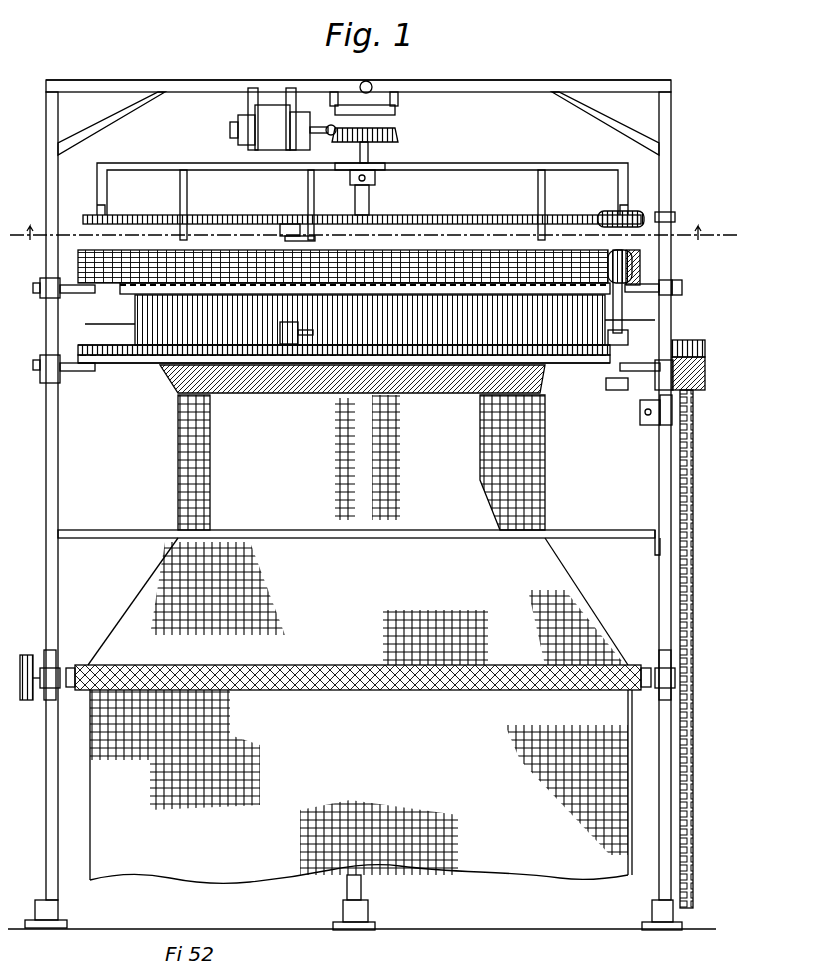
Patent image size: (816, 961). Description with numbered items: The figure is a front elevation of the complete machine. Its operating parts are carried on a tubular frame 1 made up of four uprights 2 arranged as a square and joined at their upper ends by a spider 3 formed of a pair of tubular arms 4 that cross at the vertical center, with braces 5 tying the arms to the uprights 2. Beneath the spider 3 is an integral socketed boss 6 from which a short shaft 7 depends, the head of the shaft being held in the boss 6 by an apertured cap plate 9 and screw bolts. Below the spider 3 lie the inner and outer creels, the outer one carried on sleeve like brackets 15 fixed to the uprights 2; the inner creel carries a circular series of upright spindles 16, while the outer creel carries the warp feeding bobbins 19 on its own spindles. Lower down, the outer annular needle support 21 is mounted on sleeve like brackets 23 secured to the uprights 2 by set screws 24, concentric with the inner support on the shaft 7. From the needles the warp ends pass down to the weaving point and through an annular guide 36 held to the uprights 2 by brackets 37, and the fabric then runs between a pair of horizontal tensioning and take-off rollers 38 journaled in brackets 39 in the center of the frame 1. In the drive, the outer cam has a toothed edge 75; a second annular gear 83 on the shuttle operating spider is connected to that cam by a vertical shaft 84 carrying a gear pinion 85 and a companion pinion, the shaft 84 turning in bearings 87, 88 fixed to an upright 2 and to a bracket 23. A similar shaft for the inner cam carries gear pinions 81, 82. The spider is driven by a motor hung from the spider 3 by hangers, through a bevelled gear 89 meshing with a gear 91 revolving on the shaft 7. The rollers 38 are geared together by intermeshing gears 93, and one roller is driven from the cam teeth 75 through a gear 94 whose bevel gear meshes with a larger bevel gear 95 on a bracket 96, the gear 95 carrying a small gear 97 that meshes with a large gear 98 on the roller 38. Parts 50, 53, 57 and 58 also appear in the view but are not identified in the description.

The frame 1 is at (359, 505).
The uprights 2 is at (45, 579).
The spider 3 is at (563, 79).
The tubular arms 4 is at (210, 80).
The braces 5 is at (106, 121).
The socketed boss 6 is at (378, 86).
The short shaft 7 is at (369, 210).
The apertured cap plate 9 is at (374, 236).
The sleeve like brackets 15 is at (47, 302).
The upright spindles 16 is at (40, 285).
The warp feeding bobbins 19 is at (228, 262).
The outer annular needle support 21 is at (150, 386).
The sleeve like brackets 23 is at (60, 386).
The set screws 24 is at (38, 386).
The annular guide 36 is at (431, 530).
The brackets 37 is at (115, 530).
The tensioning and take-off rollers 38 is at (485, 692).
The brackets 39 is at (60, 670).
The drum rim 50 is at (138, 370).
The upper frame box 53 is at (489, 163).
The post 57 is at (180, 197).
The post 58 is at (538, 196).
The teeth 75 is at (78, 350).
The gear pinion 81 is at (286, 223).
The gear pinion 82 is at (290, 348).
The second annular gear 83 is at (455, 226).
The vertical shaft 84 is at (623, 302).
The gear pinion 85 is at (620, 218).
The bearing 87 is at (660, 237).
The bearing 88 is at (614, 388).
The bevelled gear 89 is at (330, 124).
The bevel gear 91 is at (392, 138).
The intermeshing gears 93 is at (28, 655).
The gear 94 is at (700, 345).
The larger bevel gear 95 is at (700, 440).
The bracket 96 is at (650, 433).
The small gear 97 is at (672, 452).
The large gear 98 is at (692, 830).